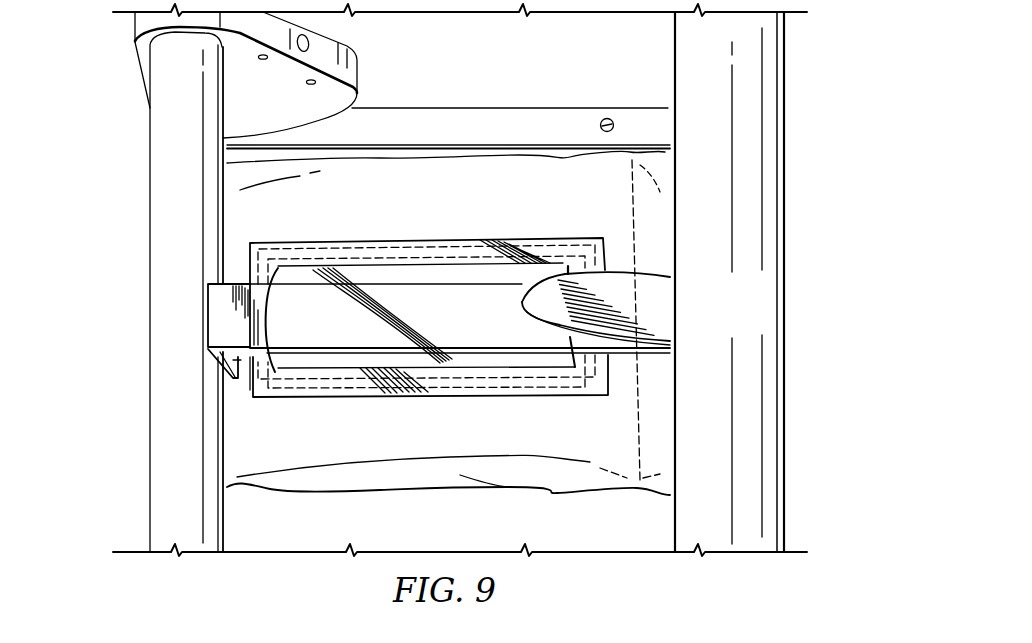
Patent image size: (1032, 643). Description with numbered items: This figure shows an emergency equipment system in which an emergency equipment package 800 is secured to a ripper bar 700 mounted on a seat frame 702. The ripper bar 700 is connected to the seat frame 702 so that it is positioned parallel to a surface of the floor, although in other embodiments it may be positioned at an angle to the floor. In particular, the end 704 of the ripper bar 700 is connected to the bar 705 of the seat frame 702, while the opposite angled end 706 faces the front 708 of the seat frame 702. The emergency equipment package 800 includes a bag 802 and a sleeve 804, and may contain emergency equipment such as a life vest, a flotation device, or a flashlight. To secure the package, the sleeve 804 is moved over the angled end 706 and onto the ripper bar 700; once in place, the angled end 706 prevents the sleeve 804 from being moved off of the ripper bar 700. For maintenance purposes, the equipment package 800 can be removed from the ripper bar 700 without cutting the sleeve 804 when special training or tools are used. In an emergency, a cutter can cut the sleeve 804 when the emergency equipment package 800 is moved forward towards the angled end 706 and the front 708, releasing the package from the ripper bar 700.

The ripper bar 700 is at (222, 321).
The seat frame 702 is at (137, 63).
The end 704 is at (240, 363).
The bar 705 is at (150, 208).
The angled end 706 is at (653, 312).
The front 708 is at (784, 247).
The emergency equipment package 800 is at (440, 480).
The bag 802 is at (645, 487).
The sleeve 804 is at (460, 273).